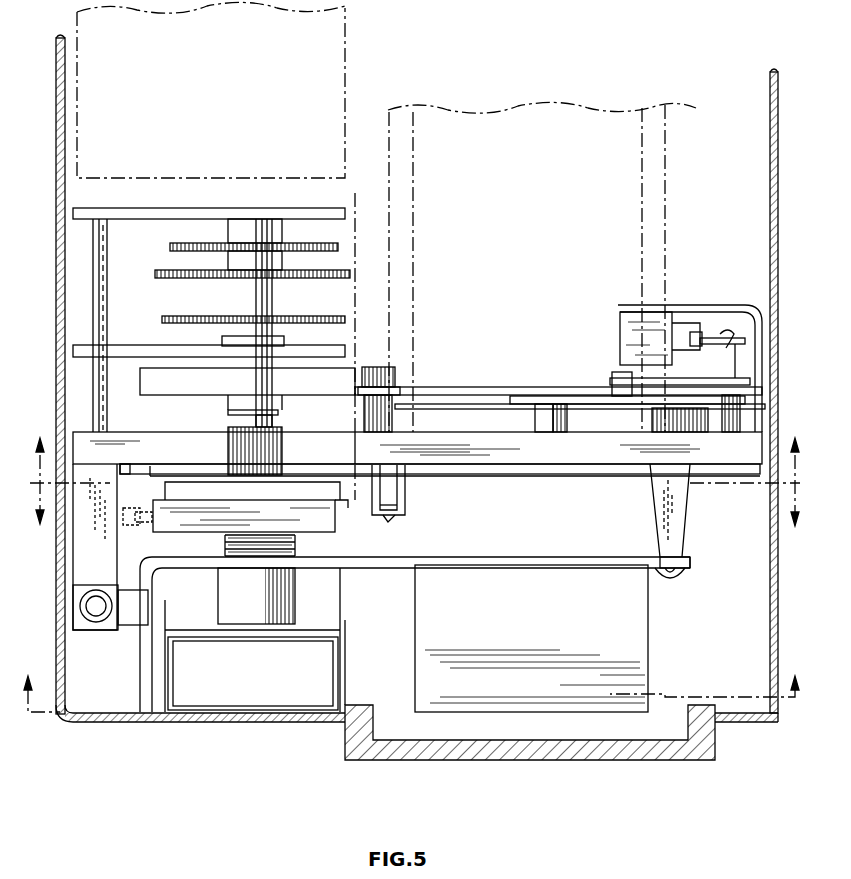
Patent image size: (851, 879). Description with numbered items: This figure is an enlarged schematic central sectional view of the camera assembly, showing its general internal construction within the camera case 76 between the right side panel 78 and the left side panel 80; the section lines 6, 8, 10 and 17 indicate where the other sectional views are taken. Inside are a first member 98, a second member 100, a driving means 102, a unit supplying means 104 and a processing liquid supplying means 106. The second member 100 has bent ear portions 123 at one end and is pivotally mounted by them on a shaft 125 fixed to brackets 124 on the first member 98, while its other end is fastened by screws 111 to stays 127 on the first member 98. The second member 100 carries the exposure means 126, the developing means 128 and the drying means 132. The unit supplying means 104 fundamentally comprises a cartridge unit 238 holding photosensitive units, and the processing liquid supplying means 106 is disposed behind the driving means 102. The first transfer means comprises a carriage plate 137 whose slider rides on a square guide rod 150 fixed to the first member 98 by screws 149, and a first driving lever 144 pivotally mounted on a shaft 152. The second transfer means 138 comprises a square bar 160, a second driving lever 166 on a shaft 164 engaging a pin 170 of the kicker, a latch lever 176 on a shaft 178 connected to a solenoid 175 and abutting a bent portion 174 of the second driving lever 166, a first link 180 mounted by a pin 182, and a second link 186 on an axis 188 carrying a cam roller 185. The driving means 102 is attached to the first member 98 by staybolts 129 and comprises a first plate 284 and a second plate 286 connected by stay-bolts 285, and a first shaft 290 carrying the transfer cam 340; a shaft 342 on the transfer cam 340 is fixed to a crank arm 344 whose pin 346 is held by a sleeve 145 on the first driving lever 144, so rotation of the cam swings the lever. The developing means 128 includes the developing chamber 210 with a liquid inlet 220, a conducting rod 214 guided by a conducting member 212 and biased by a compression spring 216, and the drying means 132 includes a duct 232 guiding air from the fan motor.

The section line 6- 6 is at (409, 678).
The section line 8- 8 is at (409, 468).
The section line 10- 10 is at (414, 514).
The section line 17- 17 is at (355, 193).
The camera case 76 is at (562, 750).
The right side panel 78 is at (778, 322).
The left side panel 80 is at (58, 574).
The first member 98 is at (606, 466).
The second member 100 is at (372, 562).
The driving means 102 is at (176, 208).
The unit supplying means 104 is at (540, 218).
The processing liquid supplying means 106 is at (228, 88).
The screw 111 is at (678, 578).
The bent ear portion 123 is at (130, 620).
The bracket 124 is at (115, 550).
The shaft 125 is at (98, 612).
The exposure means 126 is at (545, 639).
The stay 127 is at (662, 512).
The developing means 128 is at (347, 514).
The staybolt 129 is at (100, 385).
The drying means 132 is at (344, 676).
The carriage plate 137 is at (524, 476).
The second transfer means 138 is at (668, 430).
The first driving lever 144 is at (178, 478).
The sleeve 145 is at (282, 448).
The screw 149 is at (395, 517).
The square guide rod 150 is at (398, 500).
The shaft 152 is at (95, 449).
The square bar 160 is at (465, 430).
The shaft 164 is at (565, 416).
The second driving lever 166 is at (574, 410).
The pin 170 is at (745, 393).
The bent portion 174 is at (614, 372).
The solenoid 175 is at (618, 332).
The latch lever 176 is at (688, 355).
The shaft 178 is at (740, 420).
The first link 180 is at (503, 388).
The pin 182 is at (566, 395).
The cam roller 185 is at (385, 375).
The second link 186 is at (397, 386).
The axis 188 is at (395, 413).
The developing chamber 210 is at (286, 528).
The conducting member 212 is at (285, 603).
The conducting rod 214 is at (225, 545).
The compression spring 216 is at (295, 548).
The liquid inlet 220 is at (150, 524).
The duct 232 is at (272, 676).
The cartridge unit 238 is at (598, 100).
The first plate 284 is at (158, 350).
The stay-bolt 285 is at (107, 295).
The second plate 286 is at (160, 212).
The first shaft 290 is at (272, 360).
The transfer cam 340 is at (328, 393).
The shaft 342 is at (235, 402).
The crank arm 344 is at (280, 413).
The pin 346 is at (245, 421).